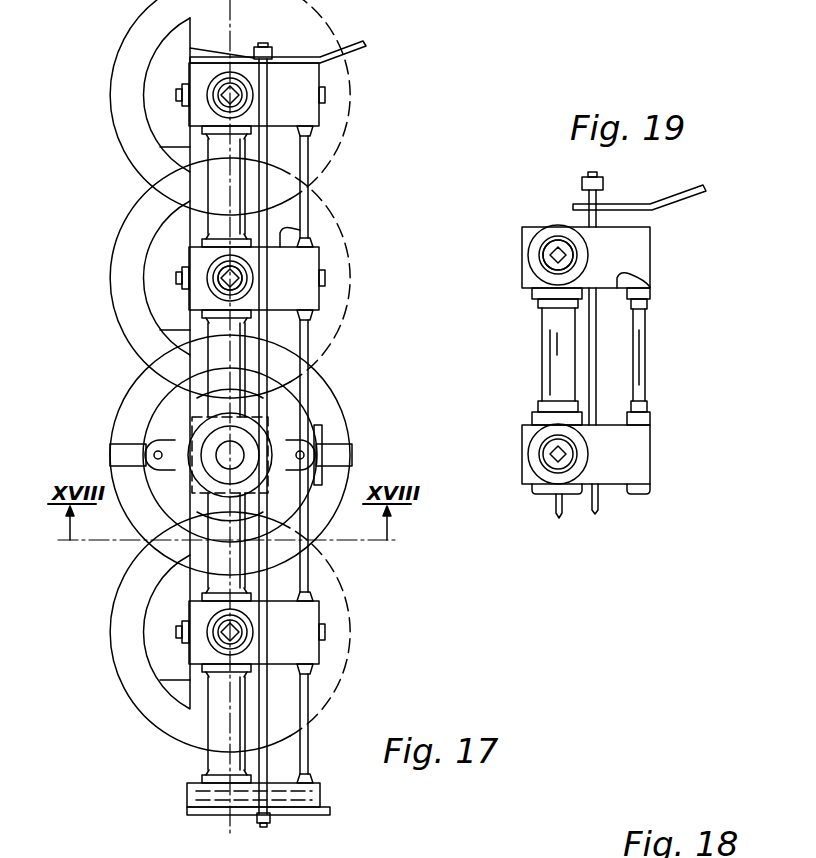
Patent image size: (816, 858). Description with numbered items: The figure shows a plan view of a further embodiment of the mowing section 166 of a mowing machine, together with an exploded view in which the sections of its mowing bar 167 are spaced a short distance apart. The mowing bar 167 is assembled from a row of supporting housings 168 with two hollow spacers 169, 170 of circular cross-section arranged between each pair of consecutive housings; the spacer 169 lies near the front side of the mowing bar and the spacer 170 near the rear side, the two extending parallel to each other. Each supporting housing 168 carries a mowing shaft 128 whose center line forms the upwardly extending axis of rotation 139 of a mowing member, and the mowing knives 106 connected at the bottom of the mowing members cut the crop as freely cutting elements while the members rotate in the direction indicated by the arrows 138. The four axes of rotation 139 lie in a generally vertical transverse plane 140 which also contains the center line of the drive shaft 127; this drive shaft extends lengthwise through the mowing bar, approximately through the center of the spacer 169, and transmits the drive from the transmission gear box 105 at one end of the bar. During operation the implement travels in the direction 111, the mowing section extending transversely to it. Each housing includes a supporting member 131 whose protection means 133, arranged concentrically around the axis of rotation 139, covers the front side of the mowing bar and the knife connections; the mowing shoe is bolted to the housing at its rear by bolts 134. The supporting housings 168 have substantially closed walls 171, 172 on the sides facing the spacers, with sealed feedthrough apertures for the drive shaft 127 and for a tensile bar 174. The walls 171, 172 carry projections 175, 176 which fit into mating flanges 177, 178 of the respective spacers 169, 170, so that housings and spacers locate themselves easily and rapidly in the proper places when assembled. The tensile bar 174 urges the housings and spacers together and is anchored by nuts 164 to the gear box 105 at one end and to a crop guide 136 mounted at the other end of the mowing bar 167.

In FIG. 17, the transmission gear box 105 is at (313, 793).
In FIG. 17, the mowing knives 106 is at (126, 452).
In FIG. 17, the direction of operative travel 111 is at (140, 777).
In FIG. 19, the drive shaft 127 is at (558, 518).
In FIG. 17, the mowing shaft 128 is at (240, 97).
In FIG. 19, the mowing shaft 128 is at (555, 257).
In FIG. 17, the supporting member 131 is at (130, 130).
In FIG. 17, the protection means 133 is at (152, 54).
In FIG. 17, the bolts 134 is at (330, 637).
In FIG. 17, the crop guide 136 is at (368, 58).
In FIG. 19, the crop guide 136 is at (693, 197).
In FIG. 17, the arrows indicating direction of rotation 138 is at (92, 55).
In FIG. 17, the axes of rotation 139 is at (240, 278).
In FIG. 19, the axes of rotation 139 is at (550, 268).
In FIG. 17, the transverse plane 140 is at (230, 55).
In FIG. 19, the nuts 164 is at (603, 181).
In FIG. 17, the mowing section 166 is at (342, 179).
In FIG. 17, the mowing bar 167 is at (139, 397).
In FIG. 17, the supporting housings 168 is at (310, 114).
In FIG. 19, the supporting housings 168 is at (640, 253).
In FIG. 17, the spacer 169 is at (216, 182).
In FIG. 19, the spacer 169 is at (548, 355).
In FIG. 17, the spacer 170 is at (305, 153).
In FIG. 19, the spacer 170 is at (640, 353).
In FIG. 17, the wall 171 is at (342, 232).
In FIG. 19, the wall 171 is at (612, 430).
In FIG. 17, the wall 172 is at (292, 314).
In FIG. 19, the wall 172 is at (655, 283).
In FIG. 19, the tensile bar 174 is at (597, 514).
In FIG. 19, the projection 175 is at (535, 297).
In FIG. 19, the projection 176 is at (652, 296).
In FIG. 19, the mating flange 177 is at (540, 308).
In FIG. 19, the mating flange 178 is at (650, 306).